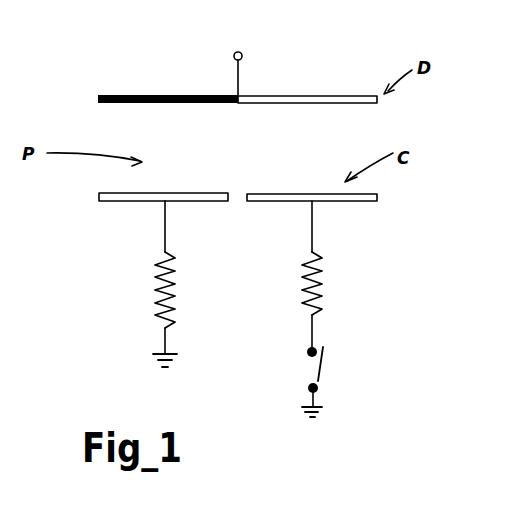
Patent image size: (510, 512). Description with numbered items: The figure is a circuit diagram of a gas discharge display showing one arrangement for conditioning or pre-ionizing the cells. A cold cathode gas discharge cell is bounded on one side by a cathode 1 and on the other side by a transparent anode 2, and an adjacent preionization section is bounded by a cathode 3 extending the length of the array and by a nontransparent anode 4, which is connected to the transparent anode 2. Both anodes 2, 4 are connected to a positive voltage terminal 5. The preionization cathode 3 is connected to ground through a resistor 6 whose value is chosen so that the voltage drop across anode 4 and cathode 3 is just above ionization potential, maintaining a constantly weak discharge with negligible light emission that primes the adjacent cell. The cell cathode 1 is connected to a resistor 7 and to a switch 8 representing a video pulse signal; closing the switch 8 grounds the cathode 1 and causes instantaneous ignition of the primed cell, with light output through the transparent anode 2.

The cathode 1 is at (366, 201).
The transparent anode 2 is at (350, 96).
The cathode 3 is at (108, 201).
The nontransparent anode 4 is at (168, 95).
The positive voltage terminal 5 is at (242, 54).
The resistor 6 is at (160, 287).
The resistor 7 is at (318, 273).
The switch 8 is at (320, 366).